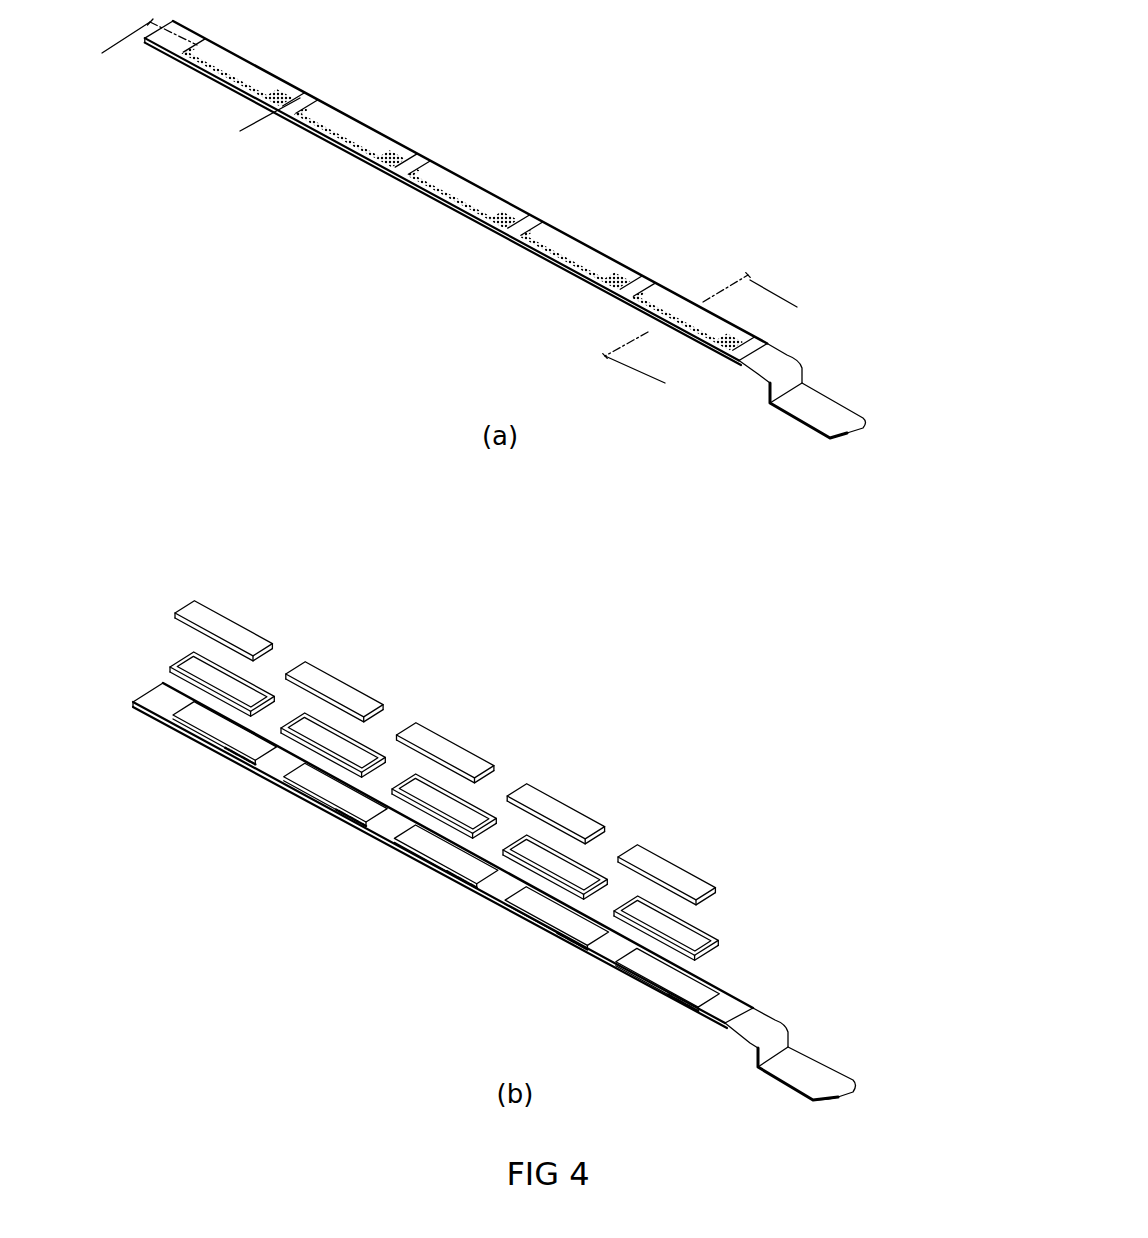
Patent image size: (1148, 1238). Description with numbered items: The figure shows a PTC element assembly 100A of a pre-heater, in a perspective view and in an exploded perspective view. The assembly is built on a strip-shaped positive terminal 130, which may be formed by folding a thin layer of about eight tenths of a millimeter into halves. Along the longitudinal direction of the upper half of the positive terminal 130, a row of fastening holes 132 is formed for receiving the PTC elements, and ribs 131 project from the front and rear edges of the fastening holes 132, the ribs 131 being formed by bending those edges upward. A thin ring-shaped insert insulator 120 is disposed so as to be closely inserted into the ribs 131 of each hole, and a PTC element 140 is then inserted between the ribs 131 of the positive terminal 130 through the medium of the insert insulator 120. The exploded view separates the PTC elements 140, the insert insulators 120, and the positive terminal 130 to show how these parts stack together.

The PTC element assembly 100A is at (597, 217).
The insert insulator 120 is at (713, 936).
The positive terminal 130 is at (852, 414).
The ribs 131 is at (520, 903).
The fastening holes 132 is at (355, 810).
The PTC element 140 is at (567, 243).